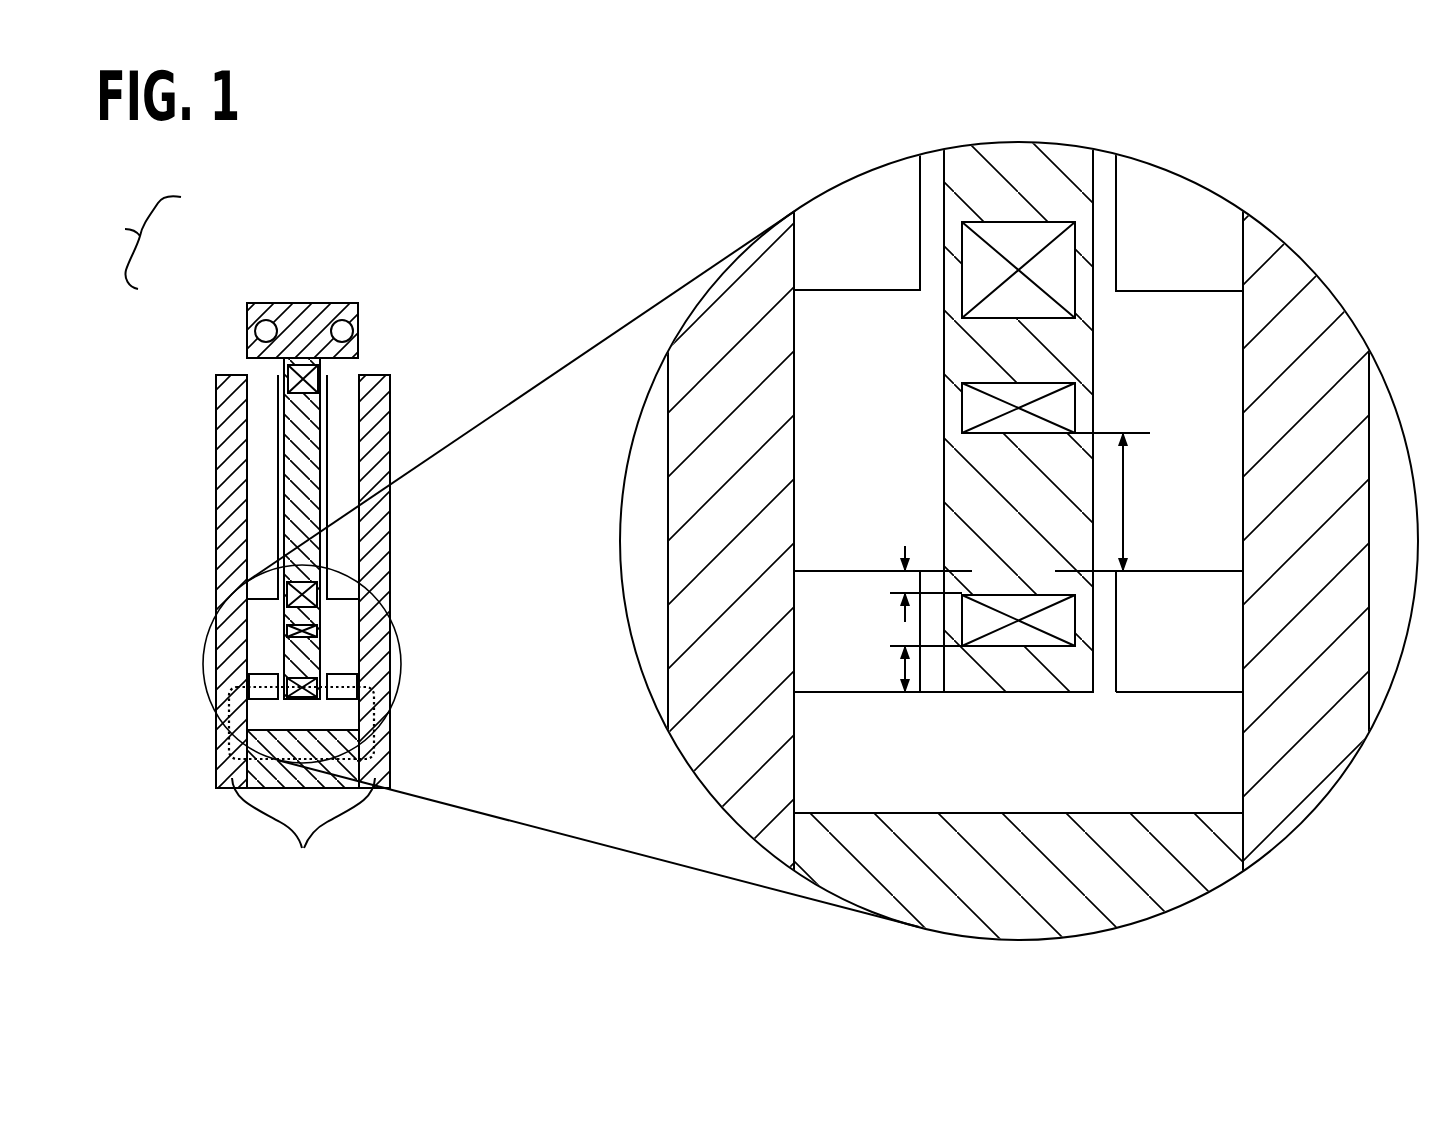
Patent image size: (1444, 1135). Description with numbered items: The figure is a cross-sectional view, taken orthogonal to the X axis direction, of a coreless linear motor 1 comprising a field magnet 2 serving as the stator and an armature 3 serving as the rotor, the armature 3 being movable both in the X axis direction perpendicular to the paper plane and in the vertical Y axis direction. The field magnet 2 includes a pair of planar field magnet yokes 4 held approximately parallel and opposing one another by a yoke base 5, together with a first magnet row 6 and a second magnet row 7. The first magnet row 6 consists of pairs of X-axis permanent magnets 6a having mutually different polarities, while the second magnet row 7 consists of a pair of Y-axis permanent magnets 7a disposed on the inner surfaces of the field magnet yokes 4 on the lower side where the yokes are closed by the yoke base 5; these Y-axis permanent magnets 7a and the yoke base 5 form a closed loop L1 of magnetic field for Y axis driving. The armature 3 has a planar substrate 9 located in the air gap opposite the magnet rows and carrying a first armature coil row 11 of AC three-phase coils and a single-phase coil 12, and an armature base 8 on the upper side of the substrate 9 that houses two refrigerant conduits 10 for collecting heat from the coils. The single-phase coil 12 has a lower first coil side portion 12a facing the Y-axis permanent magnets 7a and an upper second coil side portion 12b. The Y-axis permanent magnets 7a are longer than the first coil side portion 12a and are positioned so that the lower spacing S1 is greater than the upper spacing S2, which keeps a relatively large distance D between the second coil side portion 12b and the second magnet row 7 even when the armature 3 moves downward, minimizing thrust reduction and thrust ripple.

The linear motor 1 is at (145, 242).
The field magnet 2 is at (215, 345).
The armature 3 is at (247, 277).
The field magnet yokes 4 is at (303, 830).
The yoke base 5 is at (253, 773).
The first magnet row 6 is at (346, 608).
The X-axis permanent magnets 6a is at (823, 279).
The second magnet row 7 is at (258, 660).
The Y-axis permanent magnets 7a is at (825, 682).
The armature base 8 is at (291, 312).
The substrate 9 is at (296, 492).
The refrigerant conduits 10 is at (341, 339).
The first armature coil row 11 is at (326, 378).
The single-phase coil 12 is at (278, 625).
The first coil side portion 12a is at (1067, 617).
The second coil side portion 12b is at (1067, 407).
The closed loop of magnetic field L1 is at (374, 747).
The distance D is at (1113, 502).
The spacing S1 is at (886, 669).
The spacing S2 is at (886, 580).